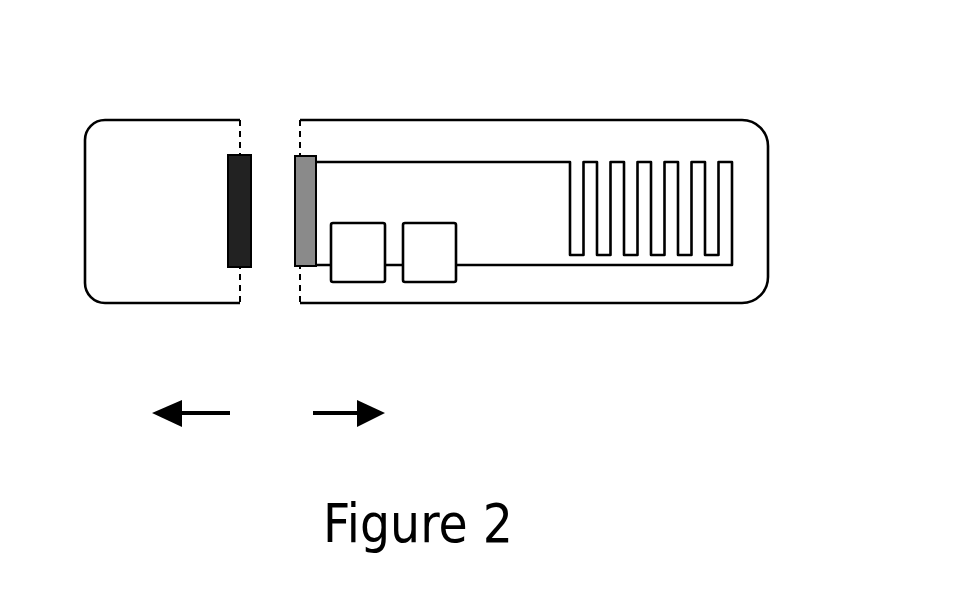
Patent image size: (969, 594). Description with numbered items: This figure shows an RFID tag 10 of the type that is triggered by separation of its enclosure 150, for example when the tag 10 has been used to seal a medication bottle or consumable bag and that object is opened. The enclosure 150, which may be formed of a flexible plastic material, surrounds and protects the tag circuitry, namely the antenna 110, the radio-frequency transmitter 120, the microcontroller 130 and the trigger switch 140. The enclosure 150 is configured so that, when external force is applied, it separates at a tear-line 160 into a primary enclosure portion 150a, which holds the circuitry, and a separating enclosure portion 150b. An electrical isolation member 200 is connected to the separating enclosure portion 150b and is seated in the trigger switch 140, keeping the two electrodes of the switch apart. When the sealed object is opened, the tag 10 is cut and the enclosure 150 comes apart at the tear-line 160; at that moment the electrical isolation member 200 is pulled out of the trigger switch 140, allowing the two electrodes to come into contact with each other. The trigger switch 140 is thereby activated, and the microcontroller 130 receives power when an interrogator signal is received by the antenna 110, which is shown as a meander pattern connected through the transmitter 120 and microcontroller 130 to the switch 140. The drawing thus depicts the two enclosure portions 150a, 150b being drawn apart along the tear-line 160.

The tag 10 is at (459, 207).
The antenna 110 is at (737, 190).
The radio-frequency (RF) transmitter 120 is at (430, 282).
The microcontroller 130 is at (360, 282).
The trigger switch 140 is at (304, 135).
The enclosure 150 is at (419, 212).
The primary enclosure portion 150a is at (323, 120).
The separating enclosure portion 150b is at (157, 120).
The tear-line 160 is at (295, 290).
The electrical isolation member 200 is at (241, 135).